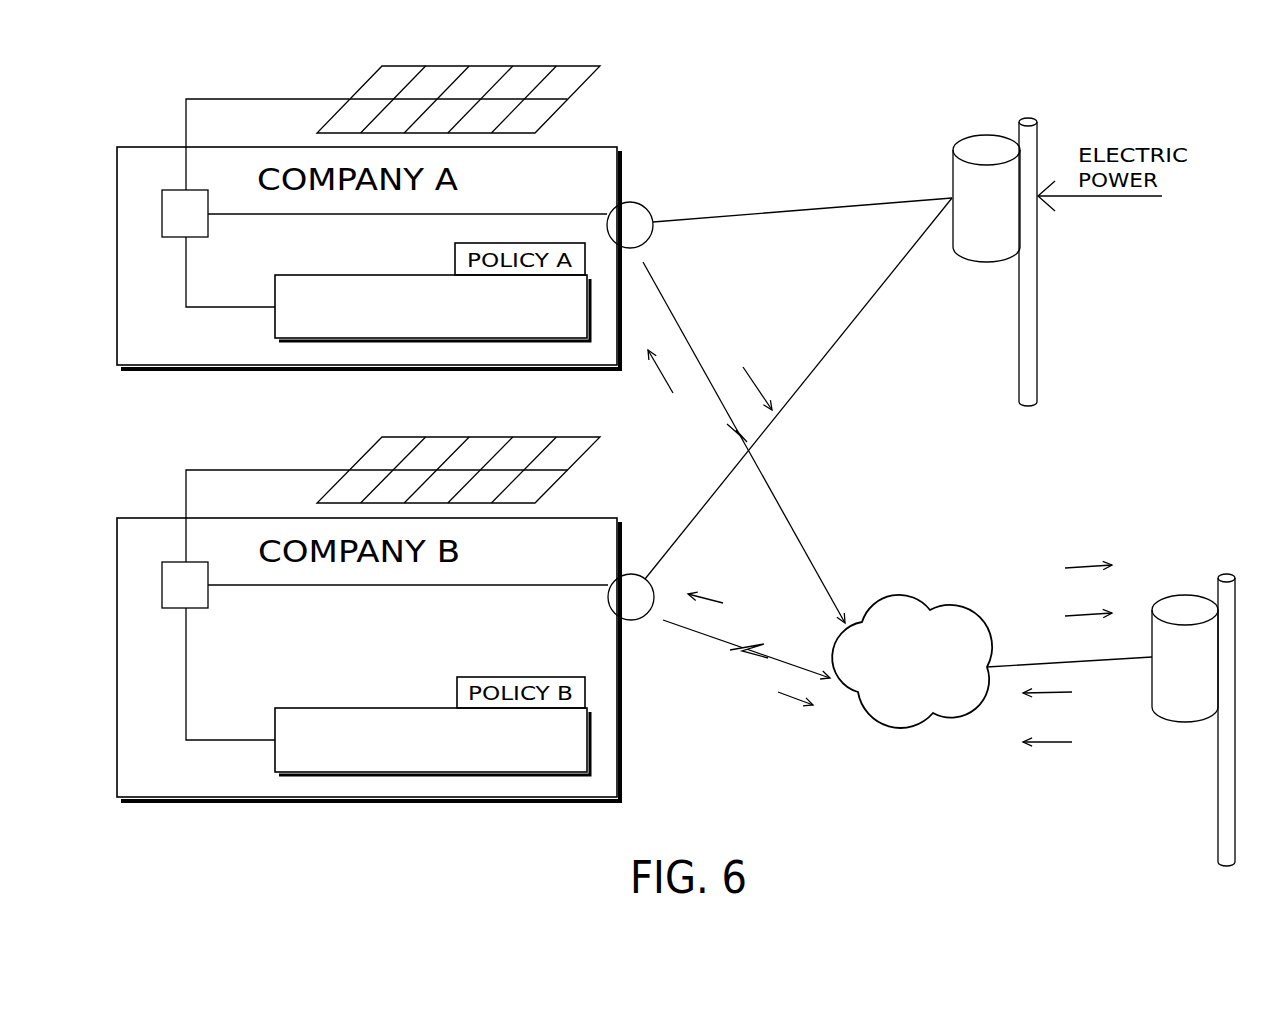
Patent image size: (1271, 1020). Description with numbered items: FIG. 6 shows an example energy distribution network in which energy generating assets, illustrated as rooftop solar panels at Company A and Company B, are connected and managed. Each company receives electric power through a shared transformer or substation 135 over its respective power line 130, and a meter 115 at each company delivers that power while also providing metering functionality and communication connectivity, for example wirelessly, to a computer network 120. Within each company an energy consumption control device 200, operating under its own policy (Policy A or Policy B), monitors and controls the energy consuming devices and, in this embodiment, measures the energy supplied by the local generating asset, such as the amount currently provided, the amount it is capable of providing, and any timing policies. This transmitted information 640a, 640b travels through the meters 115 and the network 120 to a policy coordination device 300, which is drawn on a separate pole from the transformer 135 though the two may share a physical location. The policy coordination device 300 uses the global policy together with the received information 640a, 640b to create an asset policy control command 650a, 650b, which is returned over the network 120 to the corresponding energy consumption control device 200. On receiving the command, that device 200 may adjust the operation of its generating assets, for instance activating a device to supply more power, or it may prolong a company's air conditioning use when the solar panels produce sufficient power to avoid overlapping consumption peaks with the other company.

The meter 115 is at (639, 201).
The computer network 120 is at (896, 686).
The power line 130 is at (895, 208).
The transformer or substation 135 is at (977, 137).
The energy consumption control device 200 is at (445, 305).
The policy coordination device 300 is at (1183, 595).
The transmitted information 640a is at (723, 361).
The transmitted information 640b is at (729, 709).
The asset policy control command 650a is at (653, 426).
The asset policy control command 650b is at (729, 619).